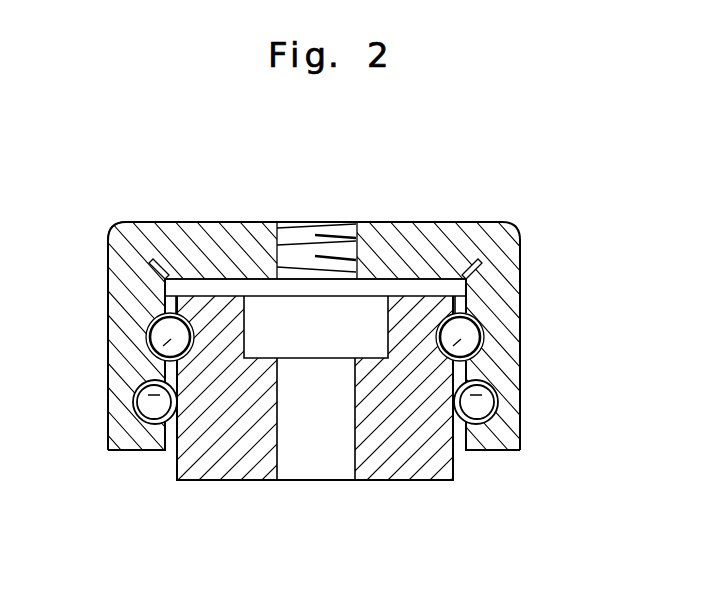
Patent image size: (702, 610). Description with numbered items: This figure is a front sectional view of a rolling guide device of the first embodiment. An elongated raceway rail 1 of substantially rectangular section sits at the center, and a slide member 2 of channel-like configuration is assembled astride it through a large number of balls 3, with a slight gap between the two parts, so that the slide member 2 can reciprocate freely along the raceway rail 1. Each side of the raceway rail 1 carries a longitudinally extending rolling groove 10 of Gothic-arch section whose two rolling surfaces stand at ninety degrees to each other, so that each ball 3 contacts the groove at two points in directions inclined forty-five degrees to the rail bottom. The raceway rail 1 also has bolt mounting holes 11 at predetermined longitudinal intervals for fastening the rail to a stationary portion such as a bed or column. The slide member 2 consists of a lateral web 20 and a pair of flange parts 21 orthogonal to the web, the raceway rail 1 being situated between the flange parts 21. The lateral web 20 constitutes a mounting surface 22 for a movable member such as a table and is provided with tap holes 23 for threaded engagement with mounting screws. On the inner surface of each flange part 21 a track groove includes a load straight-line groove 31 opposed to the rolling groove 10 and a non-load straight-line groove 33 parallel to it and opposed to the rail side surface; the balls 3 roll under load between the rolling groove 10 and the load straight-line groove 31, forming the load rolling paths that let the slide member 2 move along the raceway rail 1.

The raceway rail 1 is at (315, 450).
The slide member 2 is at (350, 335).
The balls 3 is at (135, 392).
The rolling groove 10 is at (314, 258).
The bolt mounting hole 11 is at (278, 456).
The lateral web 20 is at (417, 252).
The flange part 21 is at (133, 450).
The mounting surface 22 is at (152, 222).
The tap hole 23 is at (278, 231).
The load straight-line groove 31 is at (160, 300).
The non-load straight-line groove 33 is at (143, 408).